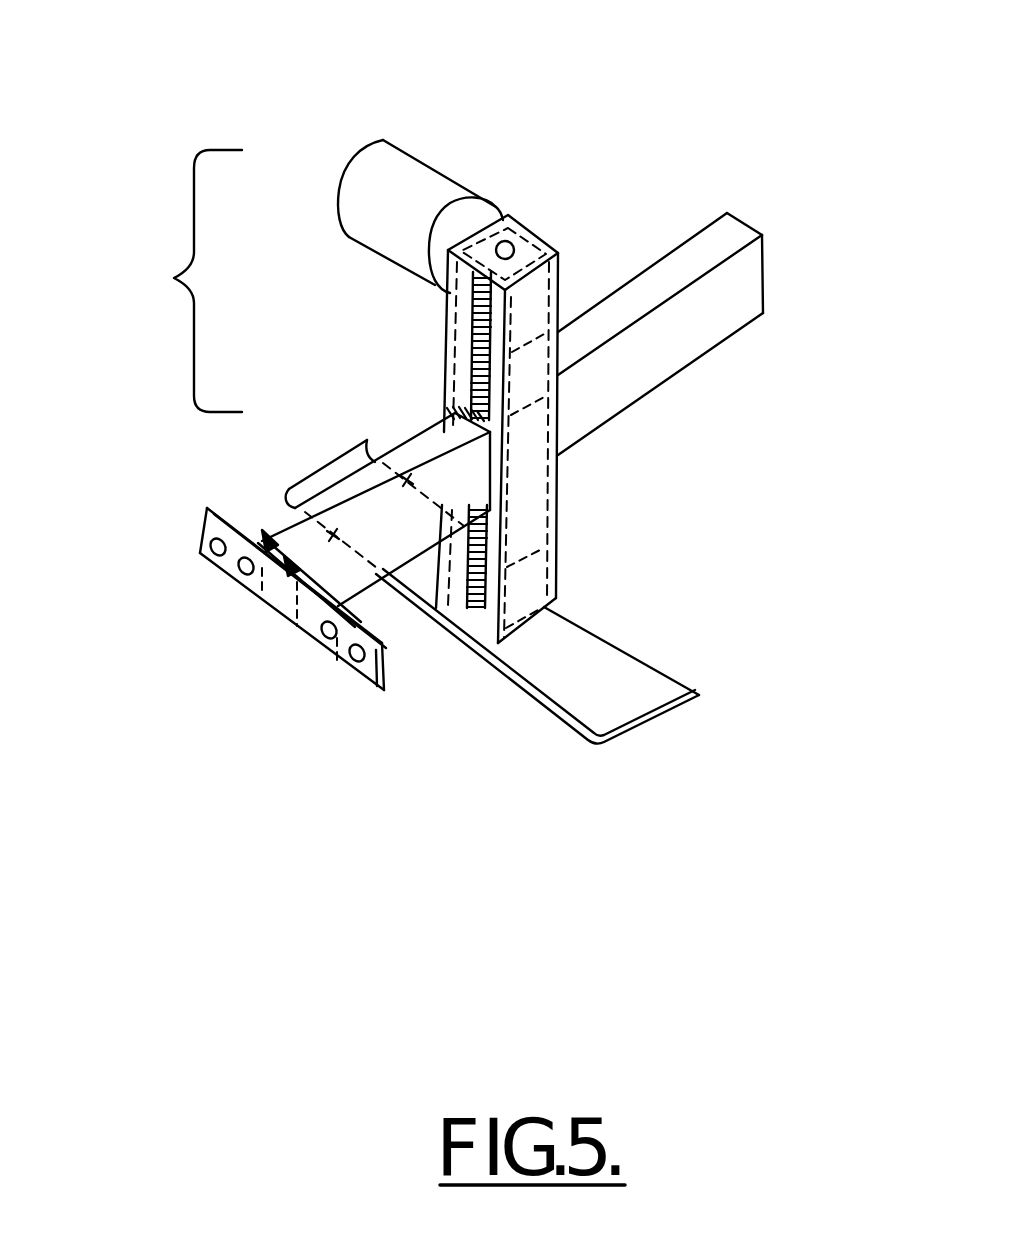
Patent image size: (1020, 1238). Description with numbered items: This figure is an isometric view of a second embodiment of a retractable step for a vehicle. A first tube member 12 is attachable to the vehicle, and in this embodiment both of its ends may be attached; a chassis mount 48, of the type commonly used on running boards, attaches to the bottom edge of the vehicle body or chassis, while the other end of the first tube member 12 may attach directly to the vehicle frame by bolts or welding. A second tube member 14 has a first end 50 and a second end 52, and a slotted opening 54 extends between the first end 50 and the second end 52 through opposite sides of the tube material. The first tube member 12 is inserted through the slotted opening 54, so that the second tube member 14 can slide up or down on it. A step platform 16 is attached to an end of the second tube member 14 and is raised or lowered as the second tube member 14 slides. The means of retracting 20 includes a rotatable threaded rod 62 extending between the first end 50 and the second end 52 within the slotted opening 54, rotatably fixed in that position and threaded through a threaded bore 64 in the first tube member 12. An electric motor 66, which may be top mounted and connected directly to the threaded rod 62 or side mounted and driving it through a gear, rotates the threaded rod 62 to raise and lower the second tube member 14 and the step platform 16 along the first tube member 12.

The first tube member 12 is at (640, 367).
The second tube member 14 is at (533, 325).
The step platform 16 is at (600, 668).
The means of retracting 20 is at (155, 281).
The chassis mount 48 is at (207, 560).
The first end 50 is at (560, 253).
The second end 52 is at (557, 598).
The slotted opening 54 is at (452, 352).
The rotatable threaded rod 62 is at (468, 522).
The threaded bore 64 is at (446, 409).
The electric motor 66 is at (418, 160).